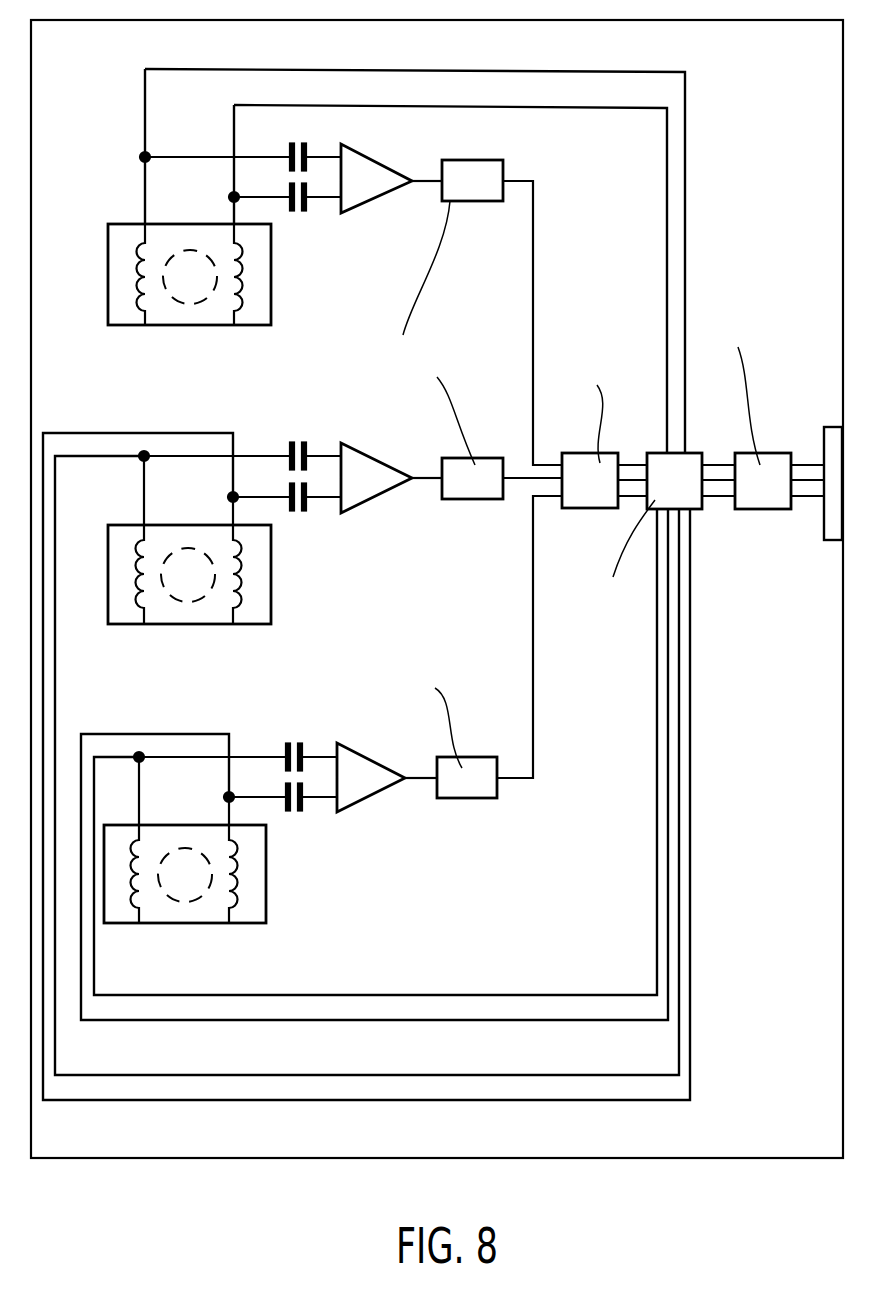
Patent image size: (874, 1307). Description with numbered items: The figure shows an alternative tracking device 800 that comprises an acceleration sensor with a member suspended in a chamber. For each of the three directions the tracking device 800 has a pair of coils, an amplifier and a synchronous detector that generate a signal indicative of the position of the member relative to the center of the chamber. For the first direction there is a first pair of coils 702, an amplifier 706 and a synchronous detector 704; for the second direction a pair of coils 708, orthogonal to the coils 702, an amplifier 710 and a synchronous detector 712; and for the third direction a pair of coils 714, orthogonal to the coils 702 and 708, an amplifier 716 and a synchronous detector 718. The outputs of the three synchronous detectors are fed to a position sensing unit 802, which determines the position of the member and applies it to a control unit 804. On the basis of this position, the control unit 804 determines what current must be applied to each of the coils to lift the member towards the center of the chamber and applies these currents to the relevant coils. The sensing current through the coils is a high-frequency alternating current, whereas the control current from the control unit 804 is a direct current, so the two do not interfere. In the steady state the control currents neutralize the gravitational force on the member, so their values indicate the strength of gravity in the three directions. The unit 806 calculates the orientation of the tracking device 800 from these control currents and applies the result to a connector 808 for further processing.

The first pair of coils 702 is at (271, 312).
The synchronous detector 704 is at (375, 190).
The amplifier 706 is at (473, 192).
The pair of coils 708 is at (271, 612).
The amplifier 710 is at (375, 488).
The synchronous detector 712 is at (472, 490).
The pair of coils 714 is at (266, 912).
The amplifier 716 is at (370, 788).
The synchronous detector 718 is at (467, 790).
The tracking device 800 is at (768, 1160).
The position sensing unit 802 is at (593, 502).
The control unit 804 is at (687, 455).
The calculating unit 806 is at (762, 502).
The connector 808 is at (828, 542).